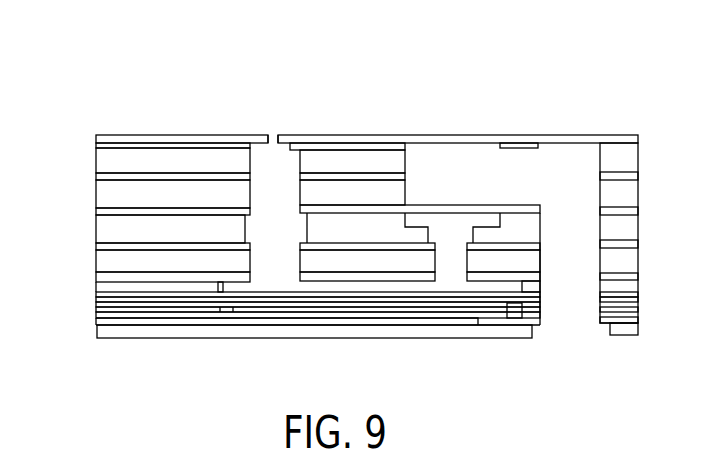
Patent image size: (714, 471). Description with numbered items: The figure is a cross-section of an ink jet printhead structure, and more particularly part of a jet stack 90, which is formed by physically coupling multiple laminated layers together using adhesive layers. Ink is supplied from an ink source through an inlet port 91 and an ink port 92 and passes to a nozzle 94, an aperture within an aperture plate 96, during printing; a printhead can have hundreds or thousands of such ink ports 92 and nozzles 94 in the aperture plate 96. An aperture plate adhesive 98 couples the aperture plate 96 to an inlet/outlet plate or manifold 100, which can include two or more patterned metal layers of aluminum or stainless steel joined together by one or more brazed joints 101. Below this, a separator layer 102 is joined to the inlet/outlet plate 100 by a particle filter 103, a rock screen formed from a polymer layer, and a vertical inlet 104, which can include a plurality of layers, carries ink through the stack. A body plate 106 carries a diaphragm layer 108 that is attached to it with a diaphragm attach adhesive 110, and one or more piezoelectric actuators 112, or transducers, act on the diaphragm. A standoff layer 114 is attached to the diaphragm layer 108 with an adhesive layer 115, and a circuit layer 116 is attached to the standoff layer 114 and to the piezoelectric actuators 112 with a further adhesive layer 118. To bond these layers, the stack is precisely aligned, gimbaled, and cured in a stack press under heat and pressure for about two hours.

The jet stack 90 is at (200, 100).
The inlet port 91 is at (567, 345).
The ink port 92 is at (420, 168).
The nozzle 94 is at (272, 137).
The aperture plate 96 is at (123, 138).
The aperture plate adhesive 98 is at (97, 147).
The inlet/outlet plate 100 is at (652, 145).
The brazed joint 101 is at (97, 180).
The separator layer 102 is at (97, 228).
The particle filter 103 is at (445, 207).
The vertical inlet 104 is at (650, 243).
The body plate 106 is at (97, 292).
The diaphragm layer 108 is at (97, 303).
The diaphragm attach adhesive 110 is at (97, 297).
The piezoelectric actuator 112 is at (340, 313).
The standoff layer 114 is at (97, 315).
The adhesive layer 115 is at (97, 308).
The circuit layer 116 is at (117, 338).
The adhesive layer 118 is at (97, 325).